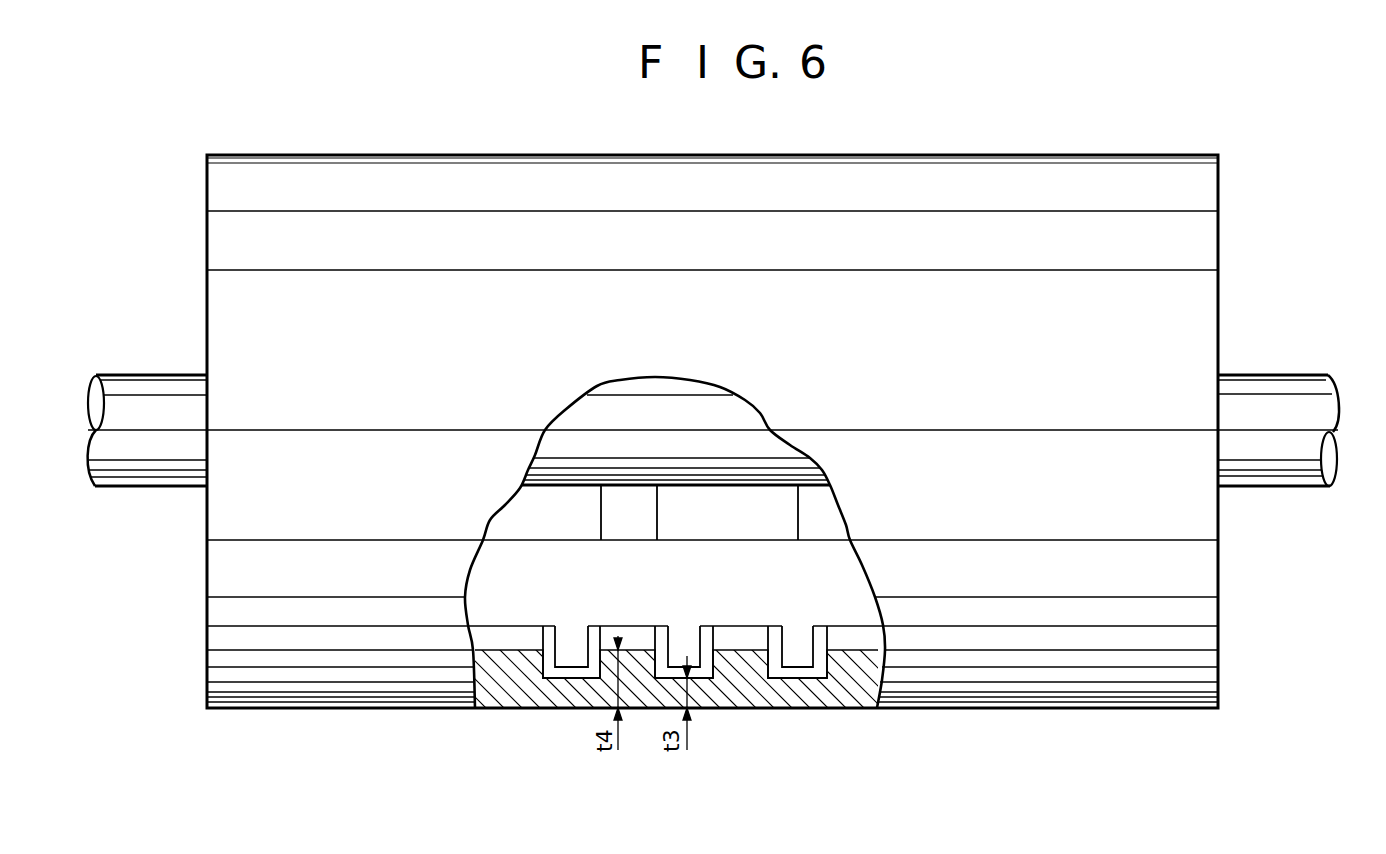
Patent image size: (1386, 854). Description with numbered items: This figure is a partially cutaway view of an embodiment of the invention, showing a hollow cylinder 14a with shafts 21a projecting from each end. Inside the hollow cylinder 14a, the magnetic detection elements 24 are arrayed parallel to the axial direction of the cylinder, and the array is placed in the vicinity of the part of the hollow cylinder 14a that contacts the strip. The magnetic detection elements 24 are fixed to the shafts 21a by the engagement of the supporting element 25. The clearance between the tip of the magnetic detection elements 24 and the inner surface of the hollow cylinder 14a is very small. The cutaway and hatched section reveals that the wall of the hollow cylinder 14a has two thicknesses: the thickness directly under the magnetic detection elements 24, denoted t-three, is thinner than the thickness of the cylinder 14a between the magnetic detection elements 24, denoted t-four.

The hollow cylinder 14a is at (1208, 240).
The shafts 21a is at (1296, 372).
The magnetic detection elements 24 is at (853, 583).
The supporting element 25 is at (658, 517).